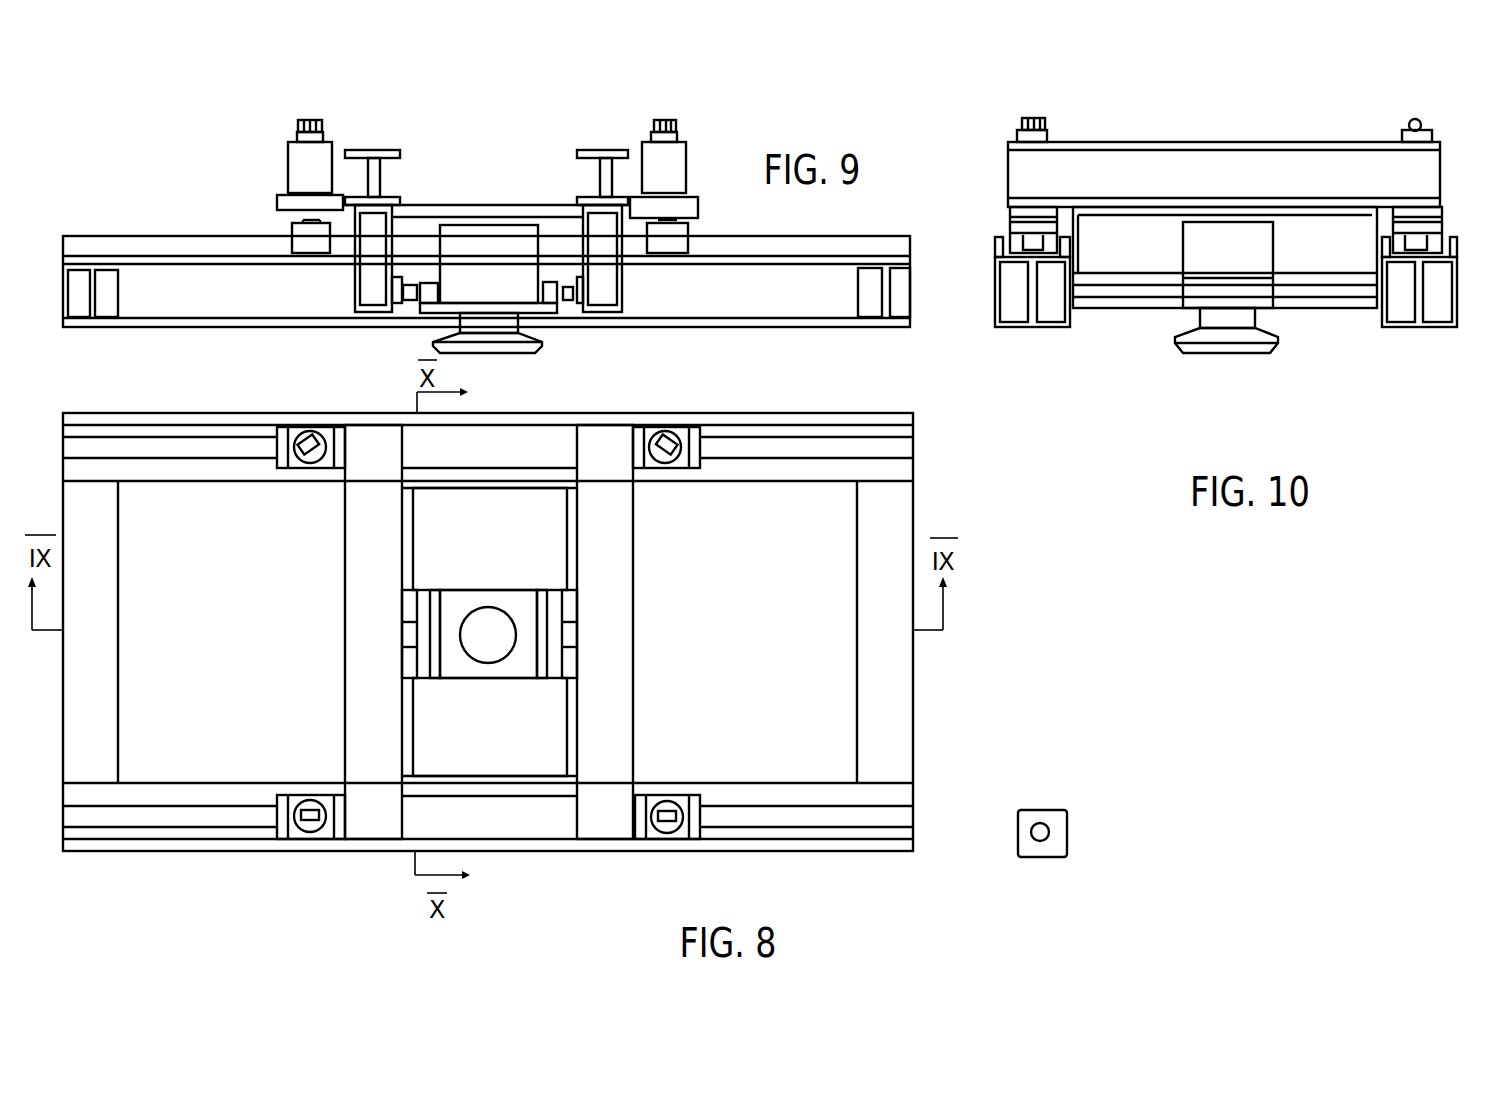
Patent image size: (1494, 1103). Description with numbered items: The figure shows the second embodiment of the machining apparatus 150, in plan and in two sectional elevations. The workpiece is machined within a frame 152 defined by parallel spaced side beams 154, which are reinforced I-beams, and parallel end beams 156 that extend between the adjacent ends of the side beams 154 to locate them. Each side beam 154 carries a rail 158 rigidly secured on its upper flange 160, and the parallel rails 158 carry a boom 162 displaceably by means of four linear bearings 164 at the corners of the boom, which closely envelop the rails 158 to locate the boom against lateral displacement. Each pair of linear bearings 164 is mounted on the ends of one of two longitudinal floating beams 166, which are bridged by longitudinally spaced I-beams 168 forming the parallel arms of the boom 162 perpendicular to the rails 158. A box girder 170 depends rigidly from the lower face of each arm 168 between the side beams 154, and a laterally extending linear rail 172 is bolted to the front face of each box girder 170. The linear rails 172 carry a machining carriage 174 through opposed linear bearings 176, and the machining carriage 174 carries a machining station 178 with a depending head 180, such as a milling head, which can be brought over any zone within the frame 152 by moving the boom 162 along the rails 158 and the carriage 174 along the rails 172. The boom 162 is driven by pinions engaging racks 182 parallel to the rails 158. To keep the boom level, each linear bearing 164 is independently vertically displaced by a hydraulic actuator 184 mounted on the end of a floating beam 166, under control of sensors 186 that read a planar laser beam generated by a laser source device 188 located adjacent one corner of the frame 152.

In FIG. 8, the apparatus 150 is at (1005, 552).
In FIG. 8, the frame 152 is at (885, 852).
In FIG. 9, the side beams 154 is at (143, 303).
In FIG. 10, the side beams 154 is at (1022, 327).
In FIG. 8, the side beams 154 is at (880, 468).
In FIG. 9, the end beams 156 is at (63, 307).
In FIG. 8, the end beams 156 is at (97, 620).
In FIG. 9, the rails 158 is at (175, 237).
In FIG. 10, the rails 158 is at (1405, 242).
In FIG. 8, the rails 158 is at (780, 447).
In FIG. 9, the upper flange 160 is at (130, 258).
In FIG. 8, the upper flange 160 is at (170, 468).
In FIG. 10, the boom 162 is at (966, 143).
In FIG. 8, the boom 162 is at (318, 578).
In FIG. 9, the linear bearings 164 is at (278, 216).
In FIG. 10, the linear bearings 164 is at (1405, 240).
In FIG. 9, the floating beams 166 is at (297, 243).
In FIG. 8, the floating beams 166 is at (468, 450).
In FIG. 9, the I-beams 168 is at (392, 149).
In FIG. 10, the I-beams 168 is at (1215, 150).
In FIG. 8, the I-beams 168 is at (363, 527).
In FIG. 9, the box girder 170 is at (632, 267).
In FIG. 10, the box girder 170 is at (1098, 258).
In FIG. 9, the linear rail 172 is at (387, 292).
In FIG. 10, the linear rail 172 is at (1113, 295).
In FIG. 8, the linear rail 172 is at (567, 528).
In FIG. 9, the machining carriage 174 is at (530, 308).
In FIG. 9, the linear bearings 176 is at (417, 300).
In FIG. 10, the linear bearings 176 is at (1247, 295).
In FIG. 8, the linear bearings 176 is at (410, 615).
In FIG. 9, the machining station 178 is at (490, 240).
In FIG. 10, the machining station 178 is at (1208, 258).
In FIG. 8, the machining station 178 is at (517, 667).
In FIG. 9, the head 180 is at (535, 347).
In FIG. 10, the head 180 is at (1223, 357).
In FIG. 10, the racks 182 is at (1440, 198).
In FIG. 8, the racks 182 is at (116, 417).
In FIG. 9, the hydraulic actuator 184 is at (285, 177).
In FIG. 10, the hydraulic actuator 184 is at (1050, 138).
In FIG. 8, the hydraulic actuator 184 is at (297, 430).
In FIG. 9, the sensors 186 is at (323, 127).
In FIG. 10, the sensors 186 is at (1025, 122).
In FIG. 8, the sensors 186 is at (318, 438).
In FIG. 8, the laser source device 188 is at (1043, 810).